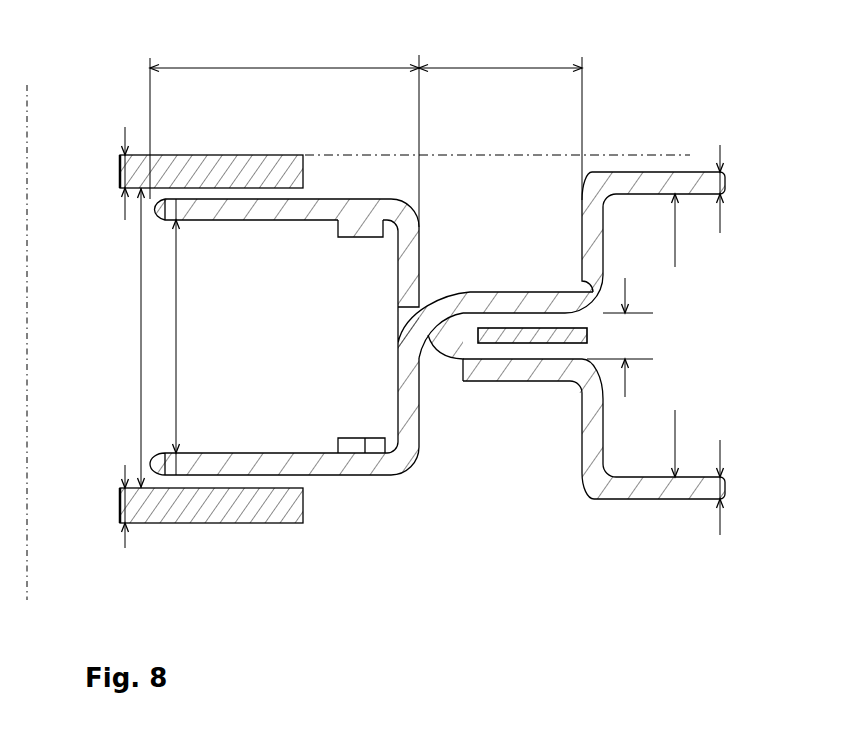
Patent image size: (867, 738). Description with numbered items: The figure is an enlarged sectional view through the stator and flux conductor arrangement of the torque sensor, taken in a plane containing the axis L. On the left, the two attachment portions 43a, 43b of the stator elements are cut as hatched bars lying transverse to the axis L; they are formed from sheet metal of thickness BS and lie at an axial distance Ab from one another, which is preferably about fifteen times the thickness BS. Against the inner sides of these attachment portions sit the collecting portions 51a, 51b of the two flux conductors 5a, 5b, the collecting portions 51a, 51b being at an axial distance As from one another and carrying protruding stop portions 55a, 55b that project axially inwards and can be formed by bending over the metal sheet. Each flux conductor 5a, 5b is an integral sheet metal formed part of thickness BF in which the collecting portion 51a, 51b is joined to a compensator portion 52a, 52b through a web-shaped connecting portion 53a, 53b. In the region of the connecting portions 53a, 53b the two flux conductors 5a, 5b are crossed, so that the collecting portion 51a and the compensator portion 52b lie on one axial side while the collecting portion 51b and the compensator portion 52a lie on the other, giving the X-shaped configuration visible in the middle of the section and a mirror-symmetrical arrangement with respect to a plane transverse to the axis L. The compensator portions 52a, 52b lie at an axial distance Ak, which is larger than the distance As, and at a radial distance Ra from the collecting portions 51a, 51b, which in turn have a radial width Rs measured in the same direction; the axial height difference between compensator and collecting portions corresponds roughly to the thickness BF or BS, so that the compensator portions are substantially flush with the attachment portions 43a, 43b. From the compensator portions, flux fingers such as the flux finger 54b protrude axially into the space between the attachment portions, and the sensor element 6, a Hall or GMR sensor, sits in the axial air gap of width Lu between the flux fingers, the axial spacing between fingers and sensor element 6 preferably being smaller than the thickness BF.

The flux conductor 5a is at (692, 165).
The flux conductor 5b is at (693, 498).
The sensor element 6 is at (575, 337).
The attachment portion 43a is at (230, 517).
The attachment portion 43b is at (197, 165).
The collecting portion 51a is at (217, 462).
The collecting portion 51b is at (227, 213).
The compensator portion 52a is at (648, 180).
The compensator portion 52b is at (640, 490).
The connecting portion 53a is at (487, 298).
The connecting portion 53b is at (445, 358).
The flux finger 54b is at (533, 368).
The stop portion 55a is at (357, 448).
The stop portion 55b is at (347, 230).
The axis L is at (32, 110).
The radial width Rs is at (354, 68).
The radial distance Ra is at (443, 68).
The sheet metal thickness BS is at (125, 137).
The axial distance Ab is at (140, 330).
The axial distance As is at (177, 373).
The sheet metal thickness BF is at (722, 168).
The axial distance Ak is at (675, 255).
The axial distance of the air gap Lu is at (625, 380).